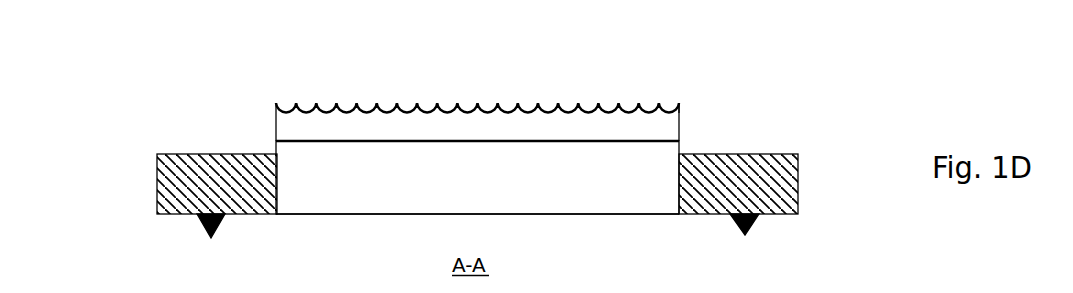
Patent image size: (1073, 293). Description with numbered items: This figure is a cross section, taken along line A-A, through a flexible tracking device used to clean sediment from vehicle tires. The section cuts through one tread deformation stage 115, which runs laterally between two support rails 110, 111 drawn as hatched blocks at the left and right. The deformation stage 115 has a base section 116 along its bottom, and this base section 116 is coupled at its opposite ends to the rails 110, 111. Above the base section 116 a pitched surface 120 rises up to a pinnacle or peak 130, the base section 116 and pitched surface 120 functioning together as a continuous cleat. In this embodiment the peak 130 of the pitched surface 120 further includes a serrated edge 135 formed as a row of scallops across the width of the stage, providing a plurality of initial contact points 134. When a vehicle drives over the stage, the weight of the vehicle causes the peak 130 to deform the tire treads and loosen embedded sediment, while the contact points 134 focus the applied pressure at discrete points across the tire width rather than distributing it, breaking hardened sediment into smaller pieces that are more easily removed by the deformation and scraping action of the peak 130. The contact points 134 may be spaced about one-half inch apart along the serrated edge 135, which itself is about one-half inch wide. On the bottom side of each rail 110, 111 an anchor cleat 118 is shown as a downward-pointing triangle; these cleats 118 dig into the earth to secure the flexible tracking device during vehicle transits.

The support rail 110 is at (157, 185).
The support rail 111 is at (798, 175).
The tread deformation stage 115 is at (494, 190).
The base section 116 is at (368, 214).
The anchor cleat 118 is at (204, 225).
The pitched surface 120 is at (292, 128).
The peak 130 is at (275, 106).
The initial contact point 134 is at (313, 91).
The serrated edge 135 is at (694, 101).